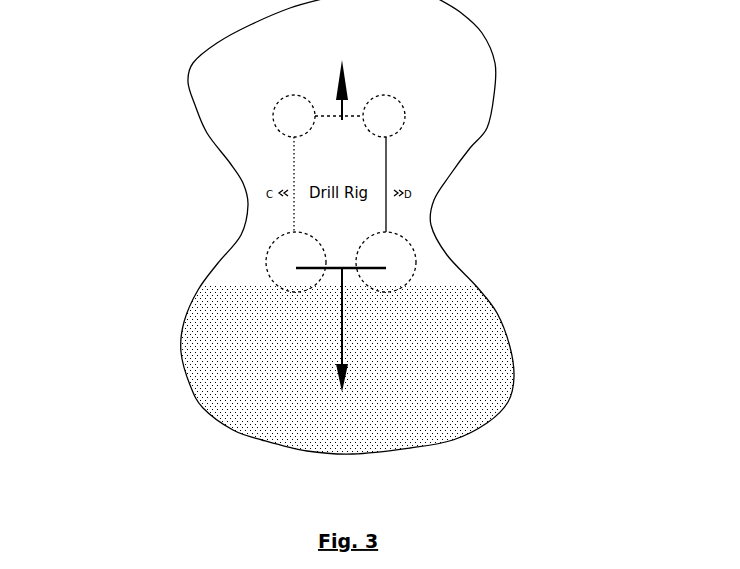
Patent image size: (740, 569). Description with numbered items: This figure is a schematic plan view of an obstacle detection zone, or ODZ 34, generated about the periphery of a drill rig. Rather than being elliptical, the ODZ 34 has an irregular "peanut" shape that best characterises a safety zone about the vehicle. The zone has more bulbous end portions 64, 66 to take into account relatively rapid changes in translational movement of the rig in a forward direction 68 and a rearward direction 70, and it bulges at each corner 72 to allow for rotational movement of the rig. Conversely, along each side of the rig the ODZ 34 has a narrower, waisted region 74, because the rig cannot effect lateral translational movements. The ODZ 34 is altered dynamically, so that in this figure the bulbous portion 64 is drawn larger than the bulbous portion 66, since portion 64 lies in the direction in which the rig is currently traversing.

The obstacle detection zone (ODZ) 34 is at (515, 377).
The bulbous end portion 64 is at (183, 328).
The bulbous end portion 66 is at (192, 82).
The forward direction 68 is at (342, 345).
The rearward direction 70 is at (340, 102).
The corner 72 is at (275, 110).
The waisted region 74 is at (216, 200).